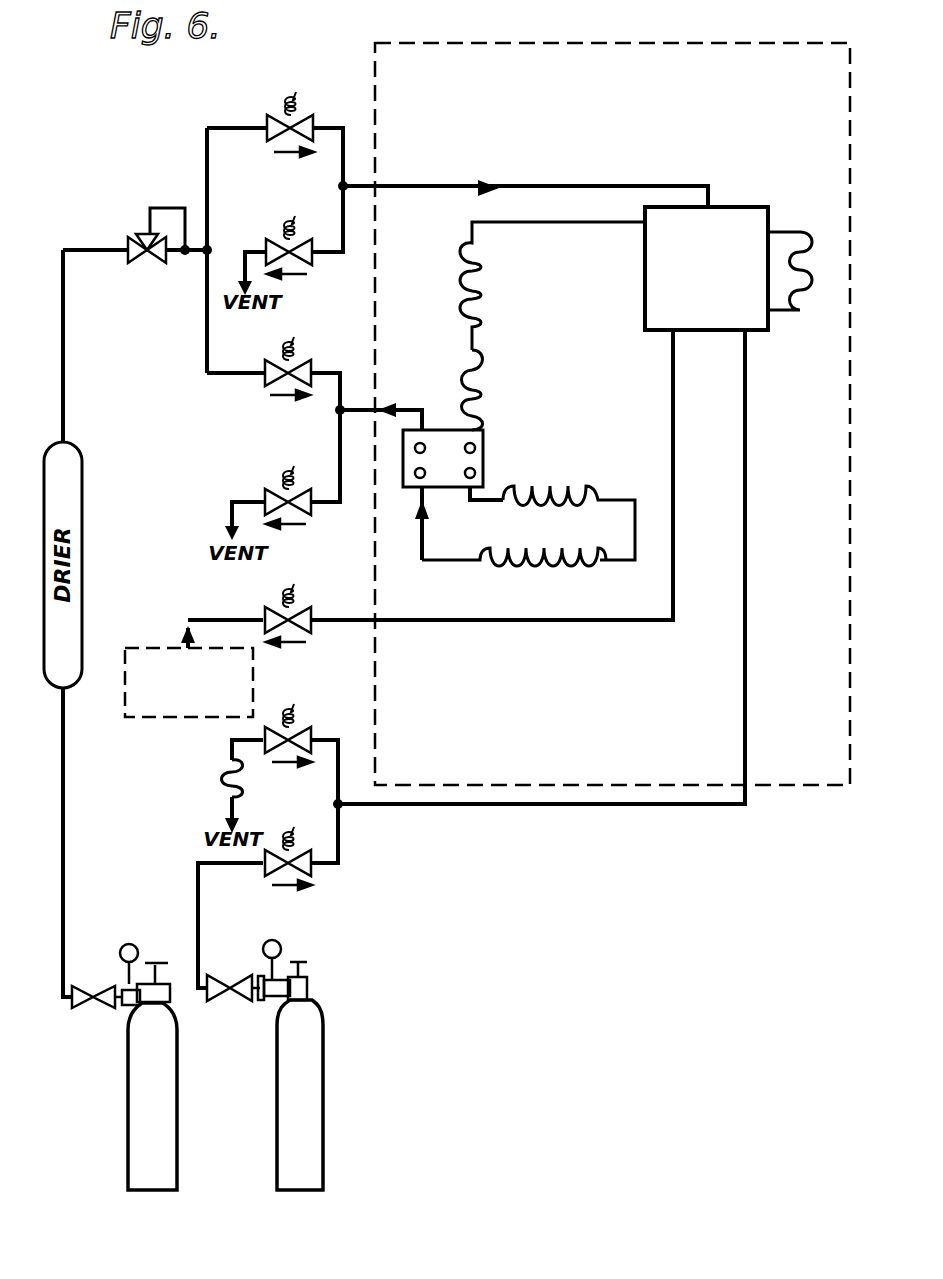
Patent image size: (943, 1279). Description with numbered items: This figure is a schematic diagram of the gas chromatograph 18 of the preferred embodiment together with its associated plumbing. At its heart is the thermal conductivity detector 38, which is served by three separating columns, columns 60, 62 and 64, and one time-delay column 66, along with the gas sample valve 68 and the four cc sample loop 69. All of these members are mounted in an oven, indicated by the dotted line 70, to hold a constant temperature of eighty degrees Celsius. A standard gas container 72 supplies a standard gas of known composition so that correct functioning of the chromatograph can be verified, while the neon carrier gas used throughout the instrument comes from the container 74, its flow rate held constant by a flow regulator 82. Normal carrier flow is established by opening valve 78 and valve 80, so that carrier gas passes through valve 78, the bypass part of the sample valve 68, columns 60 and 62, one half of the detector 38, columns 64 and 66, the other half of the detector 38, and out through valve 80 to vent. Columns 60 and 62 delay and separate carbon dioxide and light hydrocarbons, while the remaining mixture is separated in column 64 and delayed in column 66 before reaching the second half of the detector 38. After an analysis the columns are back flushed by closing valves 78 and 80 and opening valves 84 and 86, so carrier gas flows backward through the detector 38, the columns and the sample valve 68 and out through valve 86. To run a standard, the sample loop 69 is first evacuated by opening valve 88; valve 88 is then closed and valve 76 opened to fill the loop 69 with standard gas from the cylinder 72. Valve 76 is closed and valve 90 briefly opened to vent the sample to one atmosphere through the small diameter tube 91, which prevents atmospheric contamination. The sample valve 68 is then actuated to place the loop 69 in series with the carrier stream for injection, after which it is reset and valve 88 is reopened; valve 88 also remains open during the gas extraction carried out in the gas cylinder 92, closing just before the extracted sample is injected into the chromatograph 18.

The gas chromatograph 18 is at (586, 180).
The thermal conductivity detector 38 is at (440, 445).
The separating column 60 is at (480, 278).
The separating column 62 is at (480, 388).
The separating column 64 is at (546, 486).
The time-delay column 66 is at (536, 570).
The gas sample valve 68 is at (746, 207).
The sample loop 69 is at (806, 290).
The oven 70 is at (787, 786).
The standard gas container 72 is at (324, 1113).
The neon carrier gas container 74 is at (178, 1113).
The valve 76 is at (265, 875).
The valve 78 is at (307, 117).
The valve 80 is at (308, 512).
The flow regulator 82 is at (136, 240).
The valve 84 is at (268, 384).
The valve 86 is at (276, 240).
The valve 88 is at (310, 628).
The valve 90 is at (265, 755).
The small diameter tube 91 is at (218, 778).
The gas cylinder 92 is at (170, 702).